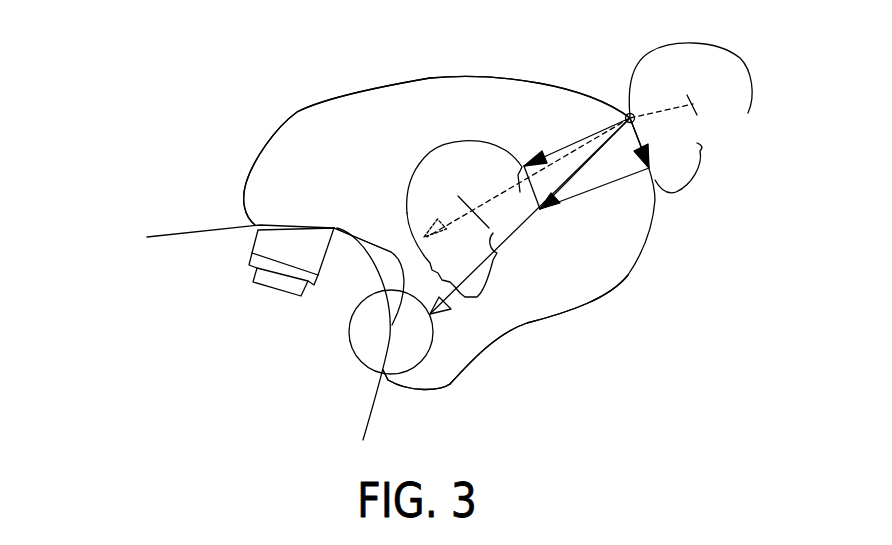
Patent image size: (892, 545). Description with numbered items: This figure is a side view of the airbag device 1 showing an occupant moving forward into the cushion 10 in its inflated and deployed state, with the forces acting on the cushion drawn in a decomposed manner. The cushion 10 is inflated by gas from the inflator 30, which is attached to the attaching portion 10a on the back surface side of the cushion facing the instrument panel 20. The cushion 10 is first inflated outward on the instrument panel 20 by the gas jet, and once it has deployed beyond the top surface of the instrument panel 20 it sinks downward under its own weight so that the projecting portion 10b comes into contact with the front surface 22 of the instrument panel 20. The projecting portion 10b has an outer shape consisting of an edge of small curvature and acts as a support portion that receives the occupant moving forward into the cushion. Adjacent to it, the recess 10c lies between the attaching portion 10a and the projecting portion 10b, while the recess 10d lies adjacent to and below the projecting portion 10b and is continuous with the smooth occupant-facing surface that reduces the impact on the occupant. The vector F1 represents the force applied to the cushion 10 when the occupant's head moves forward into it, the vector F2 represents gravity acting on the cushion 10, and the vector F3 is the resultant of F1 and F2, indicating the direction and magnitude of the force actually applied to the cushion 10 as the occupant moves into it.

The occupant protection device 1 is at (527, 65).
The cushion 10 is at (643, 243).
The attaching portion 10a is at (305, 223).
The projecting portion 10b is at (420, 387).
The recess 10c is at (391, 252).
The recess 10d is at (524, 324).
The instrument panel 20 is at (378, 385).
The front surface 22 is at (390, 340).
The inflator 30 is at (261, 290).
The force vector of occupant's head F1 is at (577, 156).
The gravity vector F2 is at (656, 143).
The resultant force vector F3 is at (594, 163).